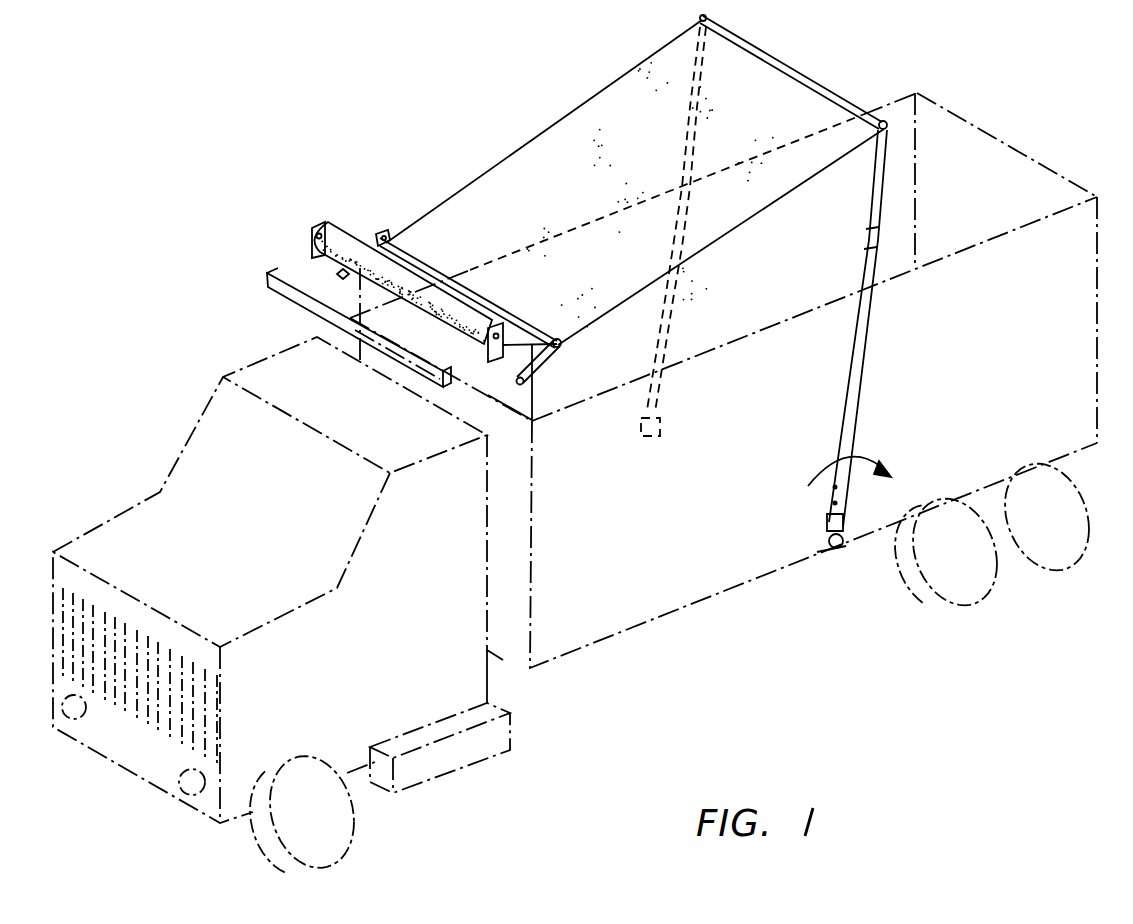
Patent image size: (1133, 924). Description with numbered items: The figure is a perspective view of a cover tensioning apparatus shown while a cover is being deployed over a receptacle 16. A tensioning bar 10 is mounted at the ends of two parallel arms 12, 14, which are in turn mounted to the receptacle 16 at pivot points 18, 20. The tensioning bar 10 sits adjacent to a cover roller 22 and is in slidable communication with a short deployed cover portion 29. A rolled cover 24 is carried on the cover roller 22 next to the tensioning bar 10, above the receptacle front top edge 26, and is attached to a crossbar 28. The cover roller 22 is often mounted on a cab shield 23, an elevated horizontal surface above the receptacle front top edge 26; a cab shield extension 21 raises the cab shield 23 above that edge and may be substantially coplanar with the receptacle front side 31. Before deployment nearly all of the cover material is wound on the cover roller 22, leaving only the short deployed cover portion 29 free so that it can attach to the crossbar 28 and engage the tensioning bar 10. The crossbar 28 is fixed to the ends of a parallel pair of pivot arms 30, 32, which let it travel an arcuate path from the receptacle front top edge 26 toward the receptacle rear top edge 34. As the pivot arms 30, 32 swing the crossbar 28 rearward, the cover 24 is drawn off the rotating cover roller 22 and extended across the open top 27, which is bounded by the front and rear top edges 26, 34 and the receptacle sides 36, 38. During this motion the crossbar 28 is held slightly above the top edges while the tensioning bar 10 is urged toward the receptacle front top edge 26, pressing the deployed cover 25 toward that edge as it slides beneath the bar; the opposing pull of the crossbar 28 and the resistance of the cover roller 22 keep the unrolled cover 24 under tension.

The tensioning bar 10 is at (477, 290).
The parallel arm 12 is at (547, 364).
The parallel arm 14 is at (378, 247).
The receptacle 16 is at (684, 539).
The pivot point 18 is at (520, 375).
The pivot point 20 is at (343, 274).
The cab shield extension 21 is at (533, 396).
The cover roller 22 is at (315, 238).
The cab shield 23 is at (358, 357).
The rolled cover 24 is at (393, 277).
The deployed cover 25 is at (582, 146).
The receptacle front top edge 26 is at (505, 403).
The open top 27 is at (961, 206).
The crossbar 28 is at (768, 53).
The short deployed cover portion 29 is at (513, 330).
The pivot arm 30 is at (857, 393).
The receptacle front side 31 is at (517, 598).
The pivot arm 32 is at (690, 107).
The receptacle rear top edge 34 is at (972, 130).
The receptacle side 36 is at (967, 240).
The receptacle side 38 is at (884, 100).